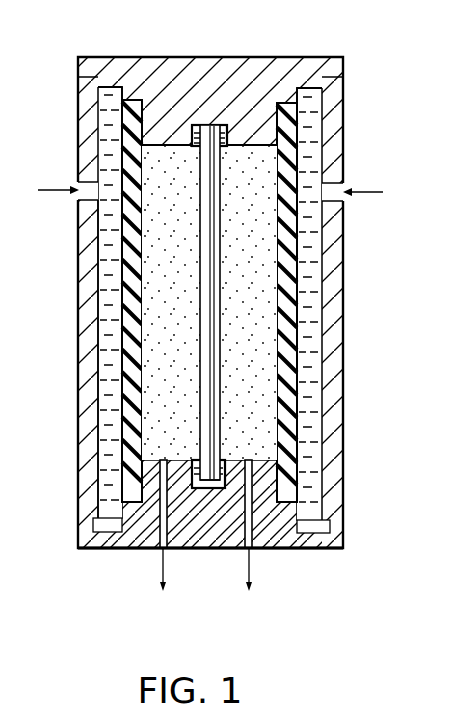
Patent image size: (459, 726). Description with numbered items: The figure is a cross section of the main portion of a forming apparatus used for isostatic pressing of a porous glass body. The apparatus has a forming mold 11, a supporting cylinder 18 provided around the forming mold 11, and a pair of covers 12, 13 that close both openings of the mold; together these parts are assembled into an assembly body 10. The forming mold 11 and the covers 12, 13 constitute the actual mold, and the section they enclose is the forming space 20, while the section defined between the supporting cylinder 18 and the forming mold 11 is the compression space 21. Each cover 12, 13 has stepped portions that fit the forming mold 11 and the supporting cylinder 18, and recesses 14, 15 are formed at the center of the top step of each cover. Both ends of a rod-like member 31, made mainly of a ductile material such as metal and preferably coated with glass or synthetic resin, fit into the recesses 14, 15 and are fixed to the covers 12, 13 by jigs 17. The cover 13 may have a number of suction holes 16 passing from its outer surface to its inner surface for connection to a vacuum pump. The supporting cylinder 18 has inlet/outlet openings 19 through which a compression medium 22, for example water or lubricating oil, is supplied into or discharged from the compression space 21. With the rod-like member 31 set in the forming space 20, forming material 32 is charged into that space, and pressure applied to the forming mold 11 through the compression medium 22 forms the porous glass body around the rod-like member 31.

The assembly body 10 is at (353, 54).
The forming mold 11 is at (326, 150).
The cover 12 is at (263, 72).
The cover 13 is at (117, 542).
The recess 14 is at (213, 124).
The recess 15 is at (203, 492).
The suction holes 16 is at (153, 542).
The jigs 17 is at (190, 138).
The supporting cylinder 18 is at (80, 333).
The inlet/outlet openings 19 is at (90, 181).
The forming space 20 is at (145, 270).
The compression space 21 is at (316, 304).
The compression medium 22 is at (100, 222).
The rod-like member 31 is at (219, 258).
The forming material 32 is at (152, 300).